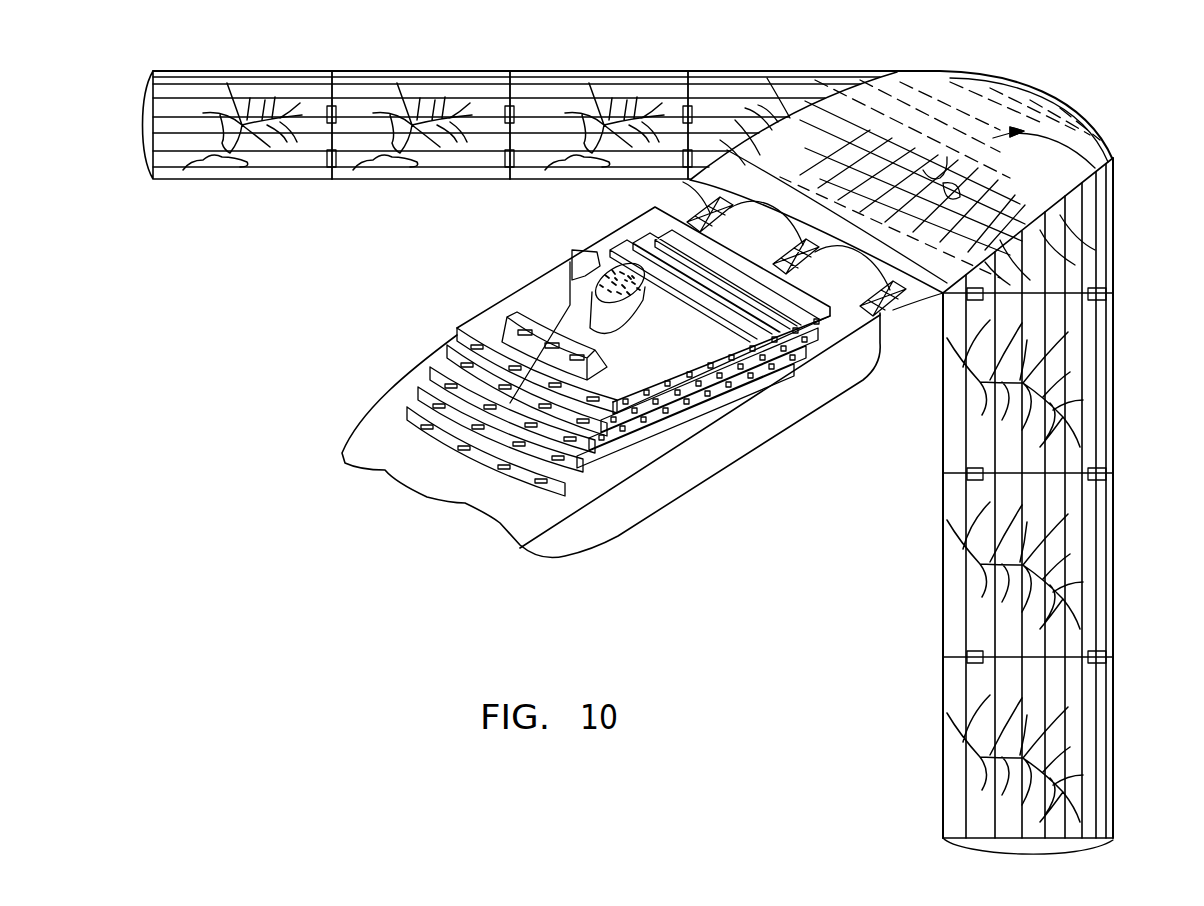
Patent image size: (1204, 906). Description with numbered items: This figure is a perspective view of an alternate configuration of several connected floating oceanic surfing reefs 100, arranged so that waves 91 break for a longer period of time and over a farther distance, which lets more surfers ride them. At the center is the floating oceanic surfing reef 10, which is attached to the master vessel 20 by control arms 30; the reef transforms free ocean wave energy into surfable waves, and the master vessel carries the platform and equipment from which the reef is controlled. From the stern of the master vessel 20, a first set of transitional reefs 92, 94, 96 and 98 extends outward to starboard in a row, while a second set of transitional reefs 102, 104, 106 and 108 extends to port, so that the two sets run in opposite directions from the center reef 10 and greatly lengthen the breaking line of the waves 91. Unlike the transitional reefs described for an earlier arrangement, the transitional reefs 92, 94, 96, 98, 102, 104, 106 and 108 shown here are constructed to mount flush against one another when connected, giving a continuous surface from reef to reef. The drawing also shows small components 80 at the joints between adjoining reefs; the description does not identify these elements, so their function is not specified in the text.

The several connected floating oceanic surfing reefs 100 is at (897, 49).
The floating oceanic surfing reef 10 is at (1062, 100).
The waves 91 is at (1115, 158).
The transitional reef 92 is at (737, 72).
The transitional reef 94 is at (552, 72).
The transitional reef 96 is at (400, 72).
The transitional reef 98 is at (208, 72).
The clips 80 is at (670, 28).
The transitional reef 102 is at (1115, 248).
The transitional reef 104 is at (1115, 383).
The transitional reef 106 is at (1115, 573).
The transitional reef 108 is at (1115, 745).
The control arms 30 is at (893, 312).
The master vessel 20 is at (380, 402).